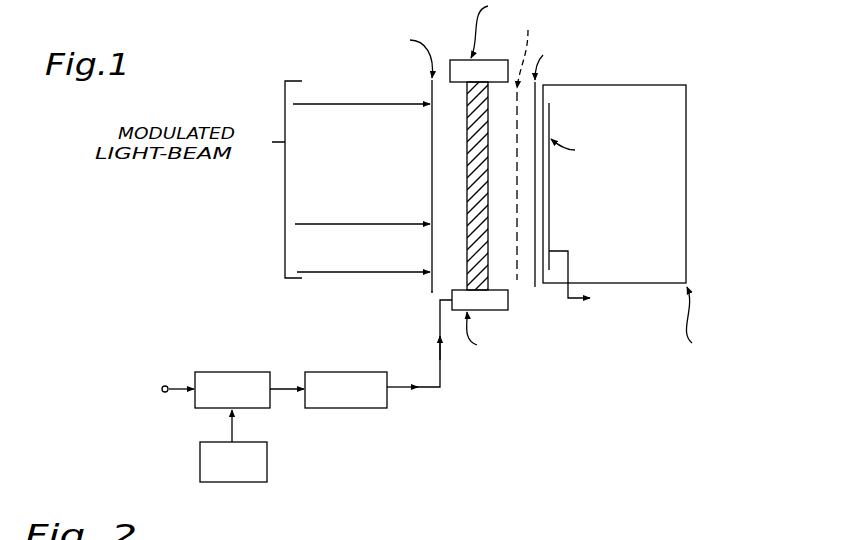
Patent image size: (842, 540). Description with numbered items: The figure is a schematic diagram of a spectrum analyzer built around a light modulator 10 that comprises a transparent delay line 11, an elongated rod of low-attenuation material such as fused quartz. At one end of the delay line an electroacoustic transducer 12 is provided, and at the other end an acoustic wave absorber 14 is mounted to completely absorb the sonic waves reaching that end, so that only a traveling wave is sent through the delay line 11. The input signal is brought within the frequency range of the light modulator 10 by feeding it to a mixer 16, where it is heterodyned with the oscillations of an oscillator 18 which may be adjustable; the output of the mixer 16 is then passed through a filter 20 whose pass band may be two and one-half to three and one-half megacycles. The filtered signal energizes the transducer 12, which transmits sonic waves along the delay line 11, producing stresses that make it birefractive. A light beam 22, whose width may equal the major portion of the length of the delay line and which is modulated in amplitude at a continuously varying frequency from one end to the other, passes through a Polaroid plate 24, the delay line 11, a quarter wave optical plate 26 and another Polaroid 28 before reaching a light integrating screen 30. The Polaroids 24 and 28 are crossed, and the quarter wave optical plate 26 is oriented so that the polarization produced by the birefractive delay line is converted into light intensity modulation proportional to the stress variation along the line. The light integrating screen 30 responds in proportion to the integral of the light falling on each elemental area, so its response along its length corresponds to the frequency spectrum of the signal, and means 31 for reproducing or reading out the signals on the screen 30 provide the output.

The light modulator 10 is at (430, 293).
The transparent delay line 11 is at (467, 129).
The electroacoustic transducer 12 is at (508, 300).
The acoustic wave absorber 14 is at (487, 60).
The mixer 16 is at (213, 372).
The oscillator 18 is at (267, 462).
The filter 20 is at (350, 408).
The light beam 22 is at (285, 192).
The Polaroid plate 24 is at (432, 168).
The quarter wave optical plate 26 is at (516, 193).
The Polaroid 28 is at (535, 120).
The light integrating screen 30 is at (549, 226).
The means for reproducing or reading out the signals 31 is at (686, 243).